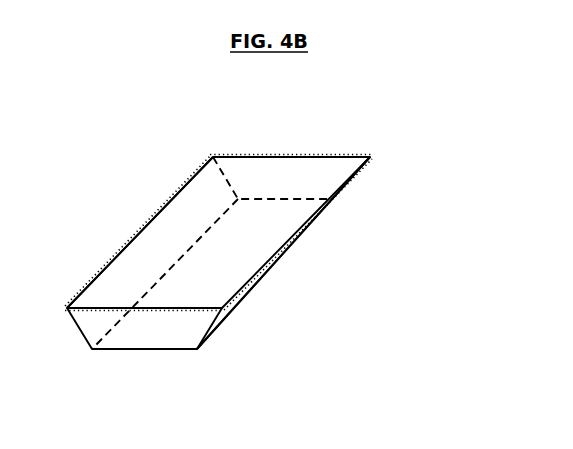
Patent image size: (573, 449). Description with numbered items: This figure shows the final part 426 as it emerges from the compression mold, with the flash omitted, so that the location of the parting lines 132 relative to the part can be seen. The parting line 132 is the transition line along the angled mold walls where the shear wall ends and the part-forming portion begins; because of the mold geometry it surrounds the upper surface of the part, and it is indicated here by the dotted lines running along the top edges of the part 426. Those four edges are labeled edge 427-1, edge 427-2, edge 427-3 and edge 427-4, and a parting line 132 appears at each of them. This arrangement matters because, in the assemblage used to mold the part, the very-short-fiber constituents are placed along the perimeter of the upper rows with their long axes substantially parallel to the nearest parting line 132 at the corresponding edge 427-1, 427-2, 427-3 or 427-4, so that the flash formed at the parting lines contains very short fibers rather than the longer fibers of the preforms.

The final part 426 is at (182, 121).
The edge 427-1 is at (300, 228).
The edge 427-2 is at (167, 201).
The edge 427-3 is at (168, 308).
The edge 427-4 is at (278, 157).
The parting line 132 is at (312, 157).